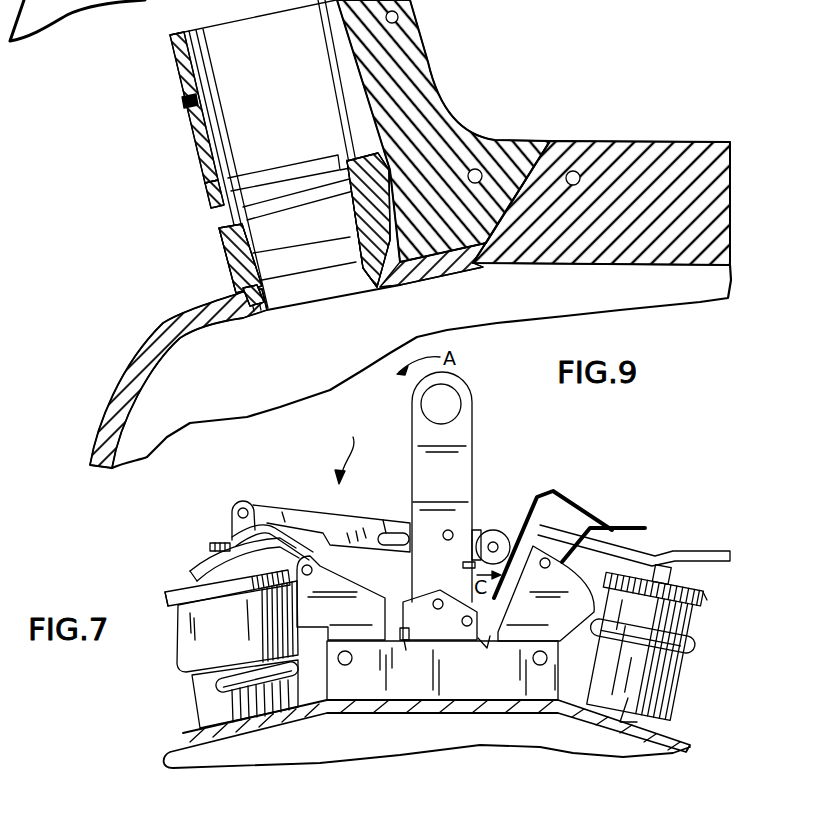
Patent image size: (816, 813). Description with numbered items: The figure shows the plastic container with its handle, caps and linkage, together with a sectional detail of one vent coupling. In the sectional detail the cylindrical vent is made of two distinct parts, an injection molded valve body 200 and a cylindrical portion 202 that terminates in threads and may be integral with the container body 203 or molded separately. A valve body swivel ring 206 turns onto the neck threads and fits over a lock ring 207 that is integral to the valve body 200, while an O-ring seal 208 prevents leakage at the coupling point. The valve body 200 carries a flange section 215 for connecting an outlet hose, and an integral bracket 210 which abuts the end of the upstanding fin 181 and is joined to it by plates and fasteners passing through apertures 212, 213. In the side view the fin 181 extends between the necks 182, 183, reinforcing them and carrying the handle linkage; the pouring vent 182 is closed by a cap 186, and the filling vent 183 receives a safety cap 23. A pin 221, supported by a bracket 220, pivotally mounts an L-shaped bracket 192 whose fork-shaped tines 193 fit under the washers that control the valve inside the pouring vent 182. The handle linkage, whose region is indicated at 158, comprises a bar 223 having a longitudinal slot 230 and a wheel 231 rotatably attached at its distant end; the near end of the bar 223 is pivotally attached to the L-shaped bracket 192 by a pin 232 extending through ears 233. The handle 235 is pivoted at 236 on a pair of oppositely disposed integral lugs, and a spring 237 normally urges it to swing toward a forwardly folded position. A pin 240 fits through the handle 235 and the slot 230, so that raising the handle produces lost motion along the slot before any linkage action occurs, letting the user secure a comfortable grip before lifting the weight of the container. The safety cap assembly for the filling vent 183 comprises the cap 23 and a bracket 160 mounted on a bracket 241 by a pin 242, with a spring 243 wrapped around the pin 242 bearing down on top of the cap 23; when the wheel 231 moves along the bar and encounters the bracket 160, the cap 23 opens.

In FIG. 9, the valve body 200 is at (178, 93).
In FIG. 9, the flange section 215 is at (200, 142).
In FIG. 9, the integral bracket 210 is at (408, 57).
In FIG. 9, the O-ring seal 208 is at (380, 188).
In FIG. 9, the aperture 212 is at (488, 152).
In FIG. 9, the aperture 213 is at (583, 148).
In FIG. 9, the upstanding fin 181 is at (658, 153).
In FIG. 7, the upstanding fin 181 is at (427, 670).
In FIG. 9, the valve body swivel ring 206 is at (222, 235).
In FIG. 9, the lock ring 207 is at (270, 240).
In FIG. 9, the cylindrical portion 202 is at (245, 300).
In FIG. 9, the body 203 is at (312, 372).
In FIG. 7, the body 203 is at (348, 748).
In FIG. 7, the actuating mechanism 158 is at (356, 449).
In FIG. 7, the pin 232 is at (244, 503).
In FIG. 7, the ears 233 is at (237, 506).
In FIG. 7, the bar 223 is at (297, 514).
In FIG. 7, the longitudinal slot 230 is at (397, 530).
In FIG. 7, the handle 235 is at (465, 433).
In FIG. 7, the pin 240 is at (448, 528).
In FIG. 7, the wheel 231 is at (495, 530).
In FIG. 7, the pin 242 is at (577, 507).
In FIG. 7, the spring 243 is at (647, 523).
In FIG. 7, the bracket 160 is at (660, 548).
In FIG. 7, the L-shaped bracket 192 is at (233, 528).
In FIG. 7, the fork-shaped tine 193 is at (194, 572).
In FIG. 7, the cap 186 is at (165, 598).
In FIG. 7, the pin 221 is at (318, 573).
In FIG. 7, the bracket 220 is at (370, 624).
In FIG. 7, the pivot 236 is at (437, 597).
In FIG. 7, the bracket 241 is at (560, 622).
In FIG. 7, the pouring vent 182 is at (245, 636).
In FIG. 7, the spring 237 is at (418, 649).
In FIG. 7, the filling vent 183 is at (660, 677).
In FIG. 7, the cap 23 is at (705, 600).